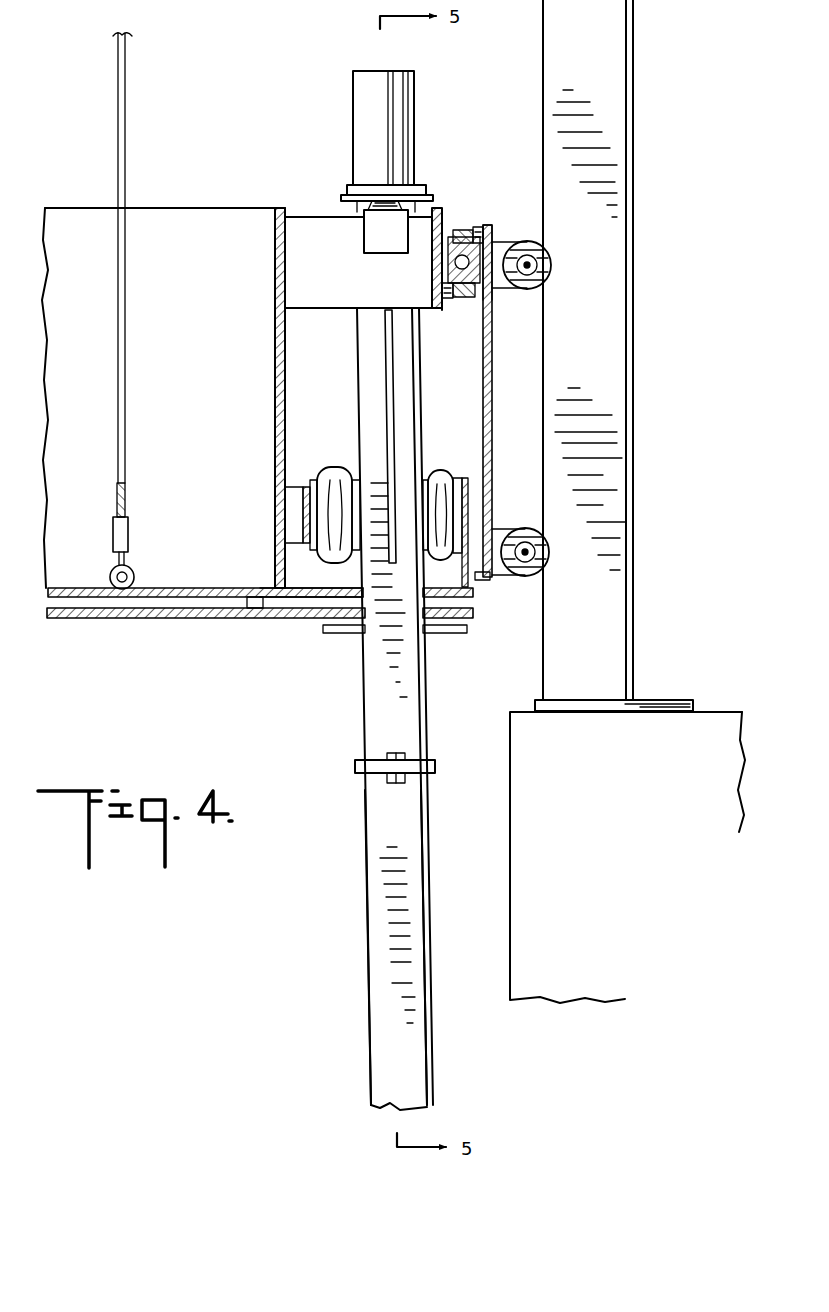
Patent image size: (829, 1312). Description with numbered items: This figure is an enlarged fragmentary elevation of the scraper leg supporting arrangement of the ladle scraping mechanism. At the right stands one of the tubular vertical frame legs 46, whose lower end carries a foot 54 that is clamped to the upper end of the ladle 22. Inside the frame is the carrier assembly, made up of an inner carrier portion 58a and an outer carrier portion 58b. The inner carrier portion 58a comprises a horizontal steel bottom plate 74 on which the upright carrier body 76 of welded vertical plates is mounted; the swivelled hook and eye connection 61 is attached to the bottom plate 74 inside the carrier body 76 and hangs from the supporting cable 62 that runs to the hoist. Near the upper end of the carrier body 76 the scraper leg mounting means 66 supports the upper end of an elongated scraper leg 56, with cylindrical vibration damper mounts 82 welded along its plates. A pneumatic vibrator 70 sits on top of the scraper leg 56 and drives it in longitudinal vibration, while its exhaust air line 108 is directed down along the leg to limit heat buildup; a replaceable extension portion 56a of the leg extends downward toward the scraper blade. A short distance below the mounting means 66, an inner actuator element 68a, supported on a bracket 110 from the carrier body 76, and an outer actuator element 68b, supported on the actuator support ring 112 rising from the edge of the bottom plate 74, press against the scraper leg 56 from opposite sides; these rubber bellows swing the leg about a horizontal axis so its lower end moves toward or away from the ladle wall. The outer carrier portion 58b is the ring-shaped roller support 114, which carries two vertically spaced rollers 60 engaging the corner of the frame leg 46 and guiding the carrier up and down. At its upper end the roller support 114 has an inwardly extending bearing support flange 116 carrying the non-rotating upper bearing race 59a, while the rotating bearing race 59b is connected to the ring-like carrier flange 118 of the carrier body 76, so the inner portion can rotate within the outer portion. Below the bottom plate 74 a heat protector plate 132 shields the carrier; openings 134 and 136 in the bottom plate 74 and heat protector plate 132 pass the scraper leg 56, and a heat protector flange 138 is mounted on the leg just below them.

The ladle 22 is at (510, 728).
The vertical frame leg 46 is at (628, 296).
The feet 54 is at (668, 700).
The scraper leg 56 is at (365, 686).
The replaceable extension portion 56a is at (375, 829).
The inner carrier portion 58a is at (246, 206).
The outer carrier portion 58b is at (500, 227).
The upper bearing race 59a is at (457, 233).
The rotating bearing race 59b is at (475, 303).
The roller 60 is at (543, 259).
The swivelled hook and eye connection 61 is at (112, 570).
The supporting cable 62 is at (124, 372).
The scraper leg mounting means 66 is at (312, 223).
The inner actuator element 68a is at (337, 467).
The outer actuator element 68b is at (445, 478).
The pneumatic vibrator 70 is at (360, 86).
The bottom plate 74 is at (188, 588).
The carrier body 76 is at (275, 376).
The vibration damper mount 82 is at (363, 253).
The exhaust air line 108 is at (390, 375).
The bracket 110 is at (292, 493).
The actuator support ring 112 is at (470, 498).
The roller support 114 is at (493, 382).
The bearing support flange 116 is at (460, 230).
The carrier flange 118 is at (463, 300).
The heat protector plate 132 is at (112, 620).
The opening 134 is at (352, 592).
The opening 136 is at (323, 628).
The heat protector flange 138 is at (448, 637).